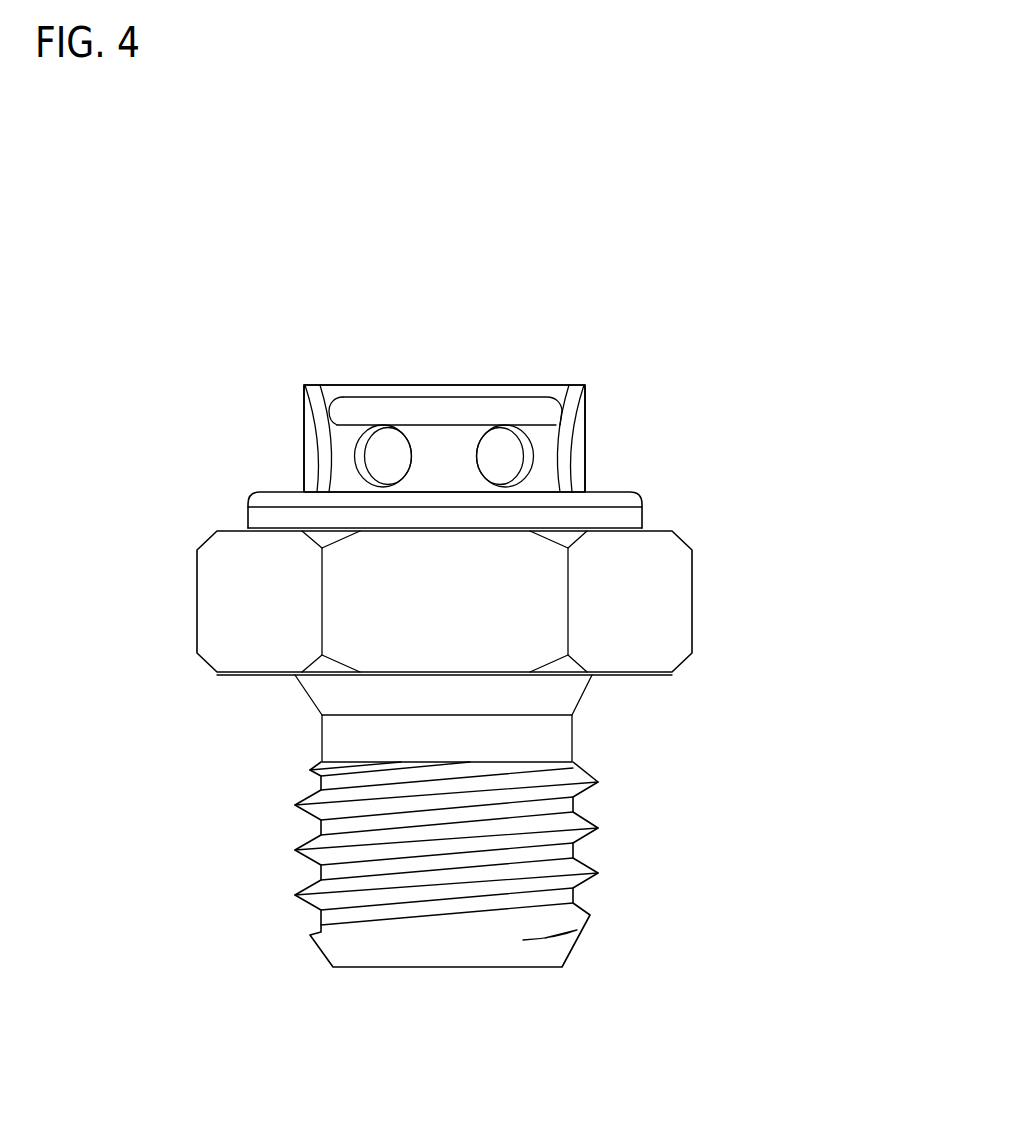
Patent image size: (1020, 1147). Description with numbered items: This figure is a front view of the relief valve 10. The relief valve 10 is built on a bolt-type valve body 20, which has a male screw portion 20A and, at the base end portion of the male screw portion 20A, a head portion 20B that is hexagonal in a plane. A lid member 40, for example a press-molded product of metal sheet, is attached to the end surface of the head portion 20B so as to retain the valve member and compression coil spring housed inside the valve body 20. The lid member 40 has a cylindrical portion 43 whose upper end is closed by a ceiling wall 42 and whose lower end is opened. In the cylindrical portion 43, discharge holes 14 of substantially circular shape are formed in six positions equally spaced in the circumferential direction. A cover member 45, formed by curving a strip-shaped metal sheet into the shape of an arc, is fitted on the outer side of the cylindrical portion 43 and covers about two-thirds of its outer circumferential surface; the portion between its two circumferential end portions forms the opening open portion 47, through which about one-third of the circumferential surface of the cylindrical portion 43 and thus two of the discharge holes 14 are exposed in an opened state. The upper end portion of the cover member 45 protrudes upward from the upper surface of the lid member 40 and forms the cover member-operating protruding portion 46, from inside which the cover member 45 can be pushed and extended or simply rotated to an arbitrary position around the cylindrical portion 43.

The relief valve 10 is at (680, 307).
The discharge holes 14 is at (397, 465).
The valve body 20 is at (497, 749).
The male screw portion 20A is at (583, 825).
The head portion 20B is at (692, 617).
The lid member 40 is at (335, 412).
The ceiling wall 42 is at (368, 397).
The cylindrical portion 43 is at (338, 455).
The cover member 45 is at (587, 390).
The cover member-operating protruding portion 46 is at (530, 383).
The opening open portion 47 is at (347, 428).